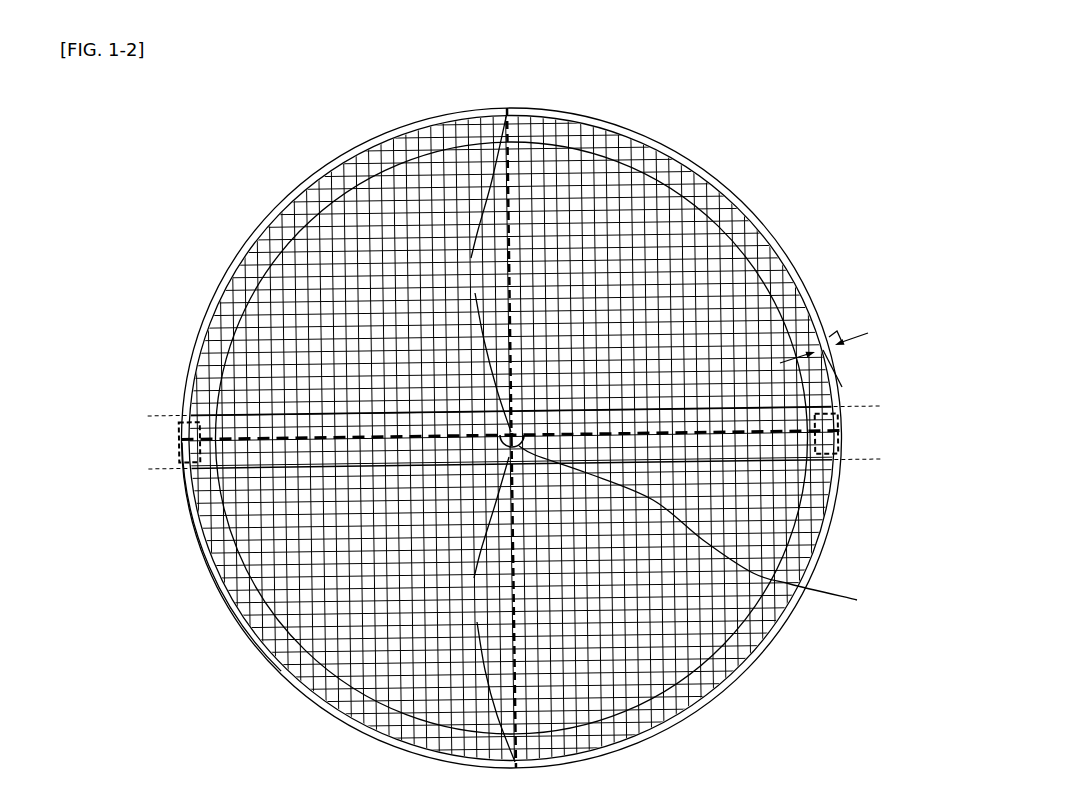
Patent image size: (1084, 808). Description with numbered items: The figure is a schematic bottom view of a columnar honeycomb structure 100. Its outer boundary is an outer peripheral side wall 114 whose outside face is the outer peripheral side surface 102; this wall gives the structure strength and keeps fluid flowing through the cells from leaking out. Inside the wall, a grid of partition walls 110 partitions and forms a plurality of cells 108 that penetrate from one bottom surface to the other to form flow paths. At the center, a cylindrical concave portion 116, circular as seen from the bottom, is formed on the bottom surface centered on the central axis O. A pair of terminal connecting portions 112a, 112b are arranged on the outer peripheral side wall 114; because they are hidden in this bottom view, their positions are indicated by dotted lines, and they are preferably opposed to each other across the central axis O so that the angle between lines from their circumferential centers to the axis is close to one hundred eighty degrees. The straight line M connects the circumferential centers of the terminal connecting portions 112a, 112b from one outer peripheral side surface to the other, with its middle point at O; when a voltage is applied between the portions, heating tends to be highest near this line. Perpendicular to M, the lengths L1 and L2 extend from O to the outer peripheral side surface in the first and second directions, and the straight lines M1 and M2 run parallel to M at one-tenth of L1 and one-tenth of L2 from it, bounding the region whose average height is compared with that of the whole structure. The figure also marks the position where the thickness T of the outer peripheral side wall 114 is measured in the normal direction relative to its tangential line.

The honeycomb structure 100 is at (467, 438).
The outer peripheral side surface 102 is at (200, 560).
The cells 108 is at (725, 217).
The partition walls 110 is at (682, 187).
The terminal connecting portion 112a is at (180, 436).
The terminal connecting portion 112b is at (843, 420).
The outer peripheral side wall 114 is at (807, 300).
The cylindrical concave portion 116 is at (372, 181).
The straight line M is at (277, 437).
The straight line M1 is at (497, 411).
The straight line M2 is at (497, 468).
The length in the first direction L1 is at (486, 273).
The length in the second direction L2 is at (491, 603).
The central axis O is at (515, 434).
The thickness of the outer peripheral side wall T is at (825, 352).